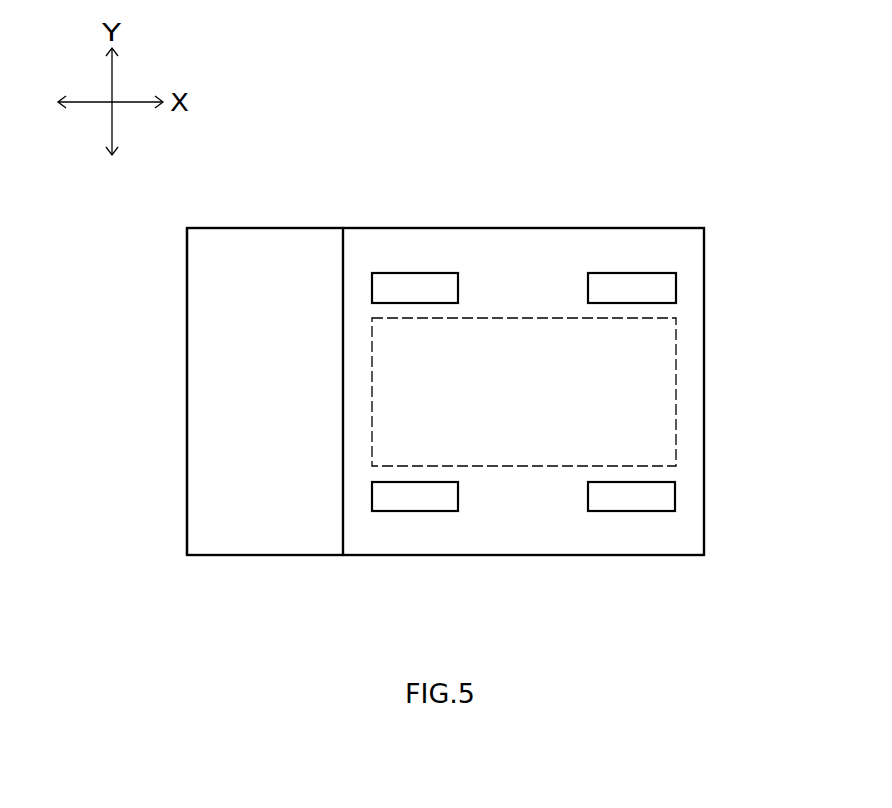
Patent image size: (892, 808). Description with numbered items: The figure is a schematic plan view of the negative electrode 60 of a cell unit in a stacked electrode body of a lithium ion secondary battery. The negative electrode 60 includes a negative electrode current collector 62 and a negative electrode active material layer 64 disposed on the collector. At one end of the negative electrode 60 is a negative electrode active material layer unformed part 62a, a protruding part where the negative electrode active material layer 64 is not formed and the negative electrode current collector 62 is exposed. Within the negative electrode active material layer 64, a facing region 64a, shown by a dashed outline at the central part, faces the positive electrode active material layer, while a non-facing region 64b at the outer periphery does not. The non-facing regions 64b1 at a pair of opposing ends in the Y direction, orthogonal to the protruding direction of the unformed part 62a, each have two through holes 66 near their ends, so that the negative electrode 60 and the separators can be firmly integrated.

The negative electrode 60 is at (713, 481).
The negative electrode current collector 62 is at (187, 357).
The negative electrode active material layer unformed part 62a is at (212, 420).
The negative electrode active material layer 64 is at (704, 329).
The facing region 64a is at (497, 332).
The non-facing region 64b is at (695, 397).
The non-facing regions at a pair of ends 64b1 is at (536, 245).
The through hole 66 is at (404, 282).